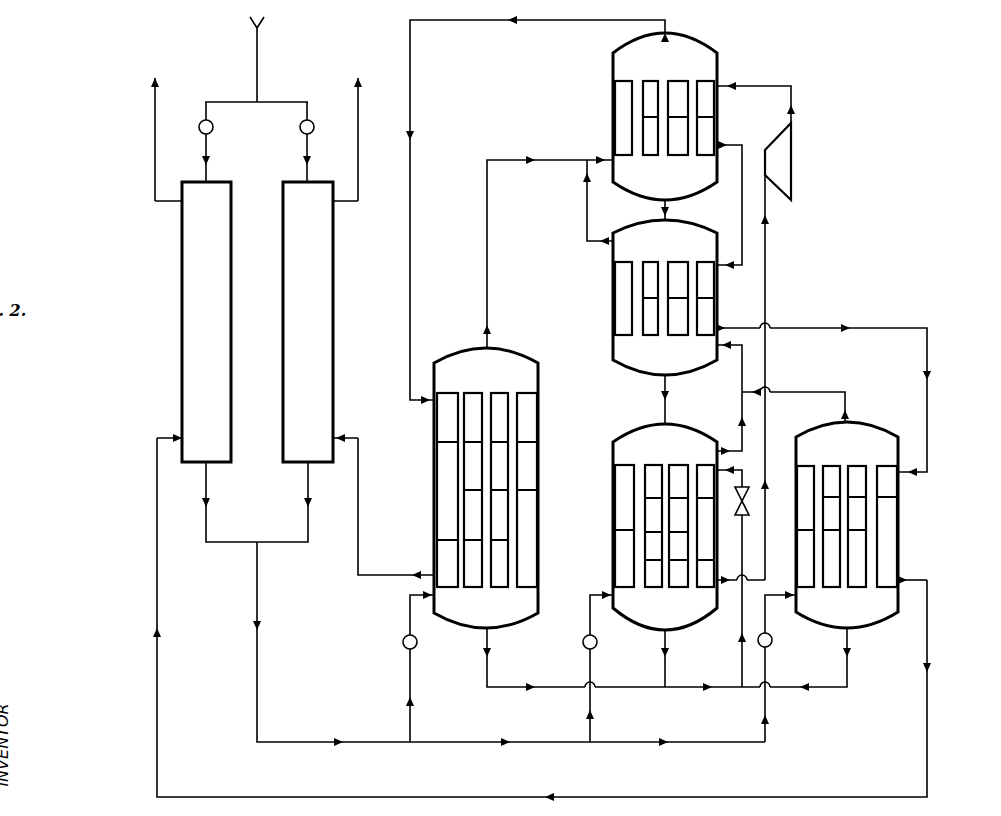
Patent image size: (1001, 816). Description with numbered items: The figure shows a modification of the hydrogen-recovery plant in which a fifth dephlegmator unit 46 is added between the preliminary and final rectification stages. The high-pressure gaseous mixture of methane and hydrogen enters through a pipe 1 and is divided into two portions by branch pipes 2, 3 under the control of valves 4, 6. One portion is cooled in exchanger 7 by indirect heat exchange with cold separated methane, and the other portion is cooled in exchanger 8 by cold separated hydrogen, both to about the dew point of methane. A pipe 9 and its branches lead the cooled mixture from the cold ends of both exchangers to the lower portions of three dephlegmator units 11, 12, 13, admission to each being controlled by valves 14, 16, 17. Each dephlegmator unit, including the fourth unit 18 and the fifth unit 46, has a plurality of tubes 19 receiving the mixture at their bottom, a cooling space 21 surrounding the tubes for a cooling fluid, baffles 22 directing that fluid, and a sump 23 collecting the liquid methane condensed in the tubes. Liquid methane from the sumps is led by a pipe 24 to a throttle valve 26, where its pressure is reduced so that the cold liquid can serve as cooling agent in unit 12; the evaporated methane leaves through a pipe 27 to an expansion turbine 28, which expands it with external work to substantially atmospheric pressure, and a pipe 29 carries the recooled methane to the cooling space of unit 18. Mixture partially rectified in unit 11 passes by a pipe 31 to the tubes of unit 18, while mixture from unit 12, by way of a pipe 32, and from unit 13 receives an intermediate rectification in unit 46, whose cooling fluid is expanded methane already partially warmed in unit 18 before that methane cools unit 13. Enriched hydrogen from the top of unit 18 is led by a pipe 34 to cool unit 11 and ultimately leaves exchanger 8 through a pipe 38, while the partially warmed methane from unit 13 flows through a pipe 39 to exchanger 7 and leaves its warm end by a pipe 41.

The pipe 1 is at (257, 60).
The branch pipe 2 is at (237, 101).
The branch pipe 3 is at (301, 101).
The valve 4 is at (199, 132).
The valve 6 is at (314, 131).
The exchanger 7 is at (206, 322).
The exchanger 8 is at (308, 322).
The pipe 9 is at (264, 644).
The dephlegmator unit 11 is at (434, 487).
The dephlegmator unit 12 is at (613, 512).
The dephlegmator unit 13 is at (898, 515).
The valve 14 is at (403, 650).
The valve 16 is at (583, 645).
The valve 17 is at (772, 643).
The dephlegmator unit 18 is at (613, 100).
The tubes 19 is at (466, 392).
The cooling space 21 is at (445, 427).
The baffles 22 is at (520, 490).
The sump 23 is at (667, 394).
The pipe 24 is at (745, 556).
The throttle valve 26 is at (740, 518).
The pipe 27 is at (770, 571).
The expansion turbine 28 is at (783, 157).
The pipe 29 is at (790, 86).
The pipe 31 is at (487, 278).
The pipe 32 is at (372, 528).
The pipe 34 is at (552, 22).
The pipe 38 is at (365, 150).
The pipe 39 is at (157, 478).
The pipe 41 is at (155, 145).
The fifth dephlegmator unit 46 is at (613, 305).